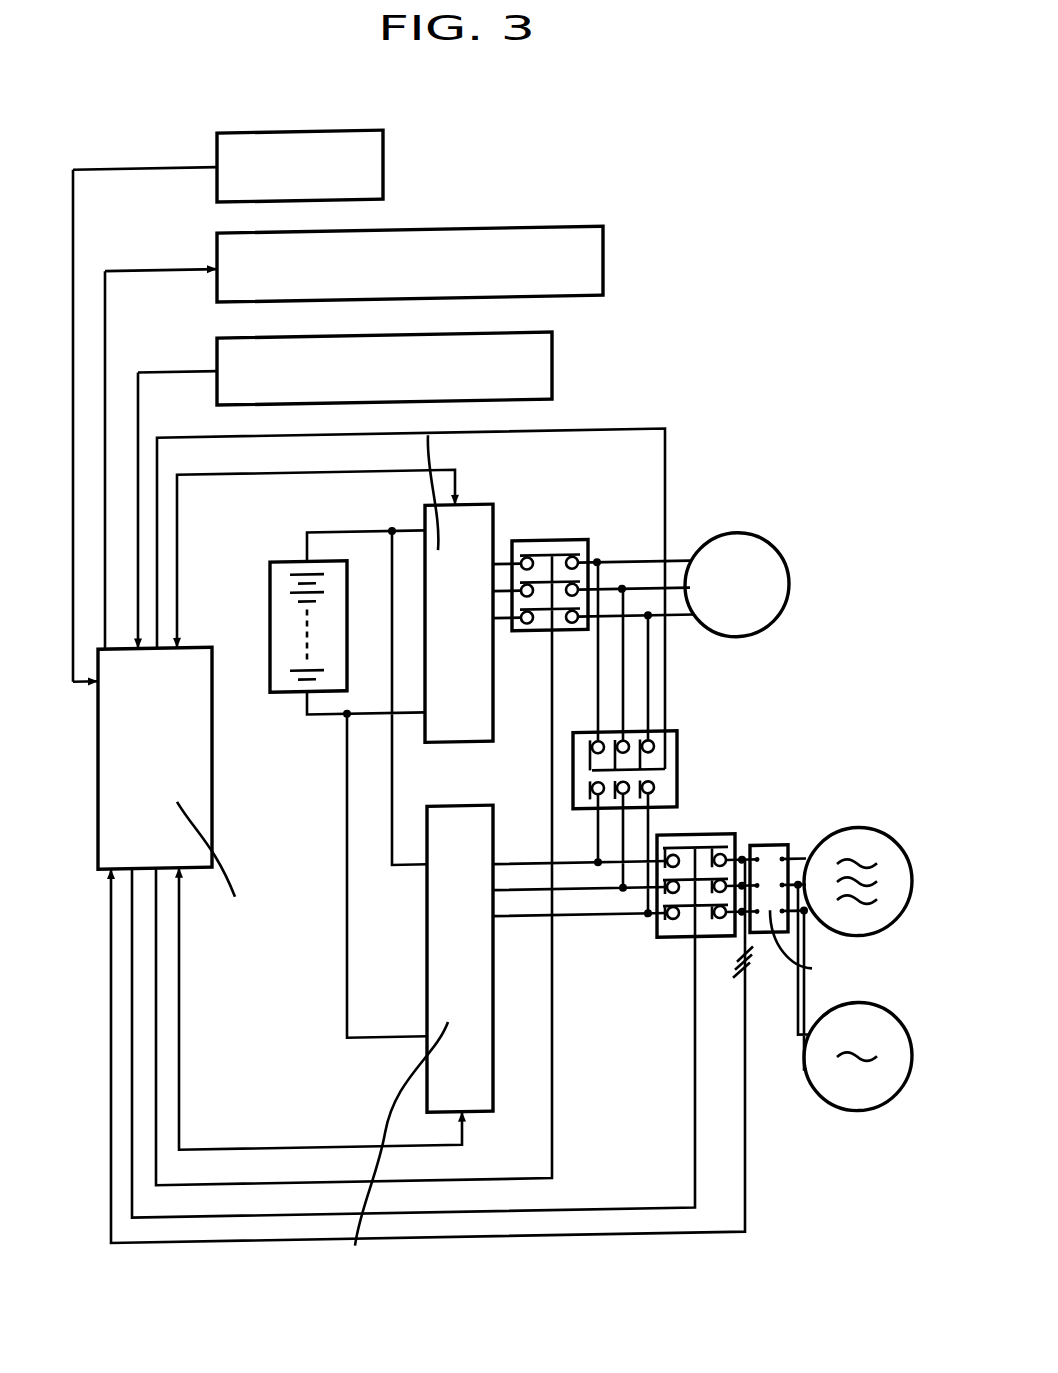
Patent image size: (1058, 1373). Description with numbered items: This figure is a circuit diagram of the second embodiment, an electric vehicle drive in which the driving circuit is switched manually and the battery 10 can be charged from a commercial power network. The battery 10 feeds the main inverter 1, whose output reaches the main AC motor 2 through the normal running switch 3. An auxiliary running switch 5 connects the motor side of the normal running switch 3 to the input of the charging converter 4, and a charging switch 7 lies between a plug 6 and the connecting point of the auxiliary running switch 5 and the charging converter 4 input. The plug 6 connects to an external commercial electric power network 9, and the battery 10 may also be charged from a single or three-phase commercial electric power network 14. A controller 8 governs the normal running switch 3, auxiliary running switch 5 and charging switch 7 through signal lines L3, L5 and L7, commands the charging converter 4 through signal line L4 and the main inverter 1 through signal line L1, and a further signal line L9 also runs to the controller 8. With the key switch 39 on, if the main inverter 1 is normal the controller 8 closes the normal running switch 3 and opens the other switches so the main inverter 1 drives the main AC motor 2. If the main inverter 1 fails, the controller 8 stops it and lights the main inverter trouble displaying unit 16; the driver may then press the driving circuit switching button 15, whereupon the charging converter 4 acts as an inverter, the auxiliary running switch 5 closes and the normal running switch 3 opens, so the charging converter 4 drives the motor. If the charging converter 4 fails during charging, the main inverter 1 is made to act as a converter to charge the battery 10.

The main inverter 1 is at (493, 524).
The main AC motor 2 is at (730, 545).
The normal running switch 3 is at (560, 550).
The charging converter 4 is at (493, 1012).
The auxiliary running switch 5 is at (680, 747).
The plug 6 is at (765, 859).
The charging switch 7 is at (668, 952).
The controller 8 is at (212, 789).
The external commercial electric power network 9 is at (838, 845).
The battery 10 is at (280, 567).
The single or three-phase commercial electric power network 14 is at (832, 1123).
The driving circuit switching button 15 is at (552, 357).
The main inverter trouble displaying unit 16 is at (603, 256).
The key switch 39 is at (383, 160).
The signal line L1 is at (330, 479).
The signal line L3 is at (555, 1107).
The signal line L4 is at (308, 1153).
The signal line L5 is at (665, 449).
The signal line L7 is at (630, 1218).
The signal line L9 is at (715, 1248).